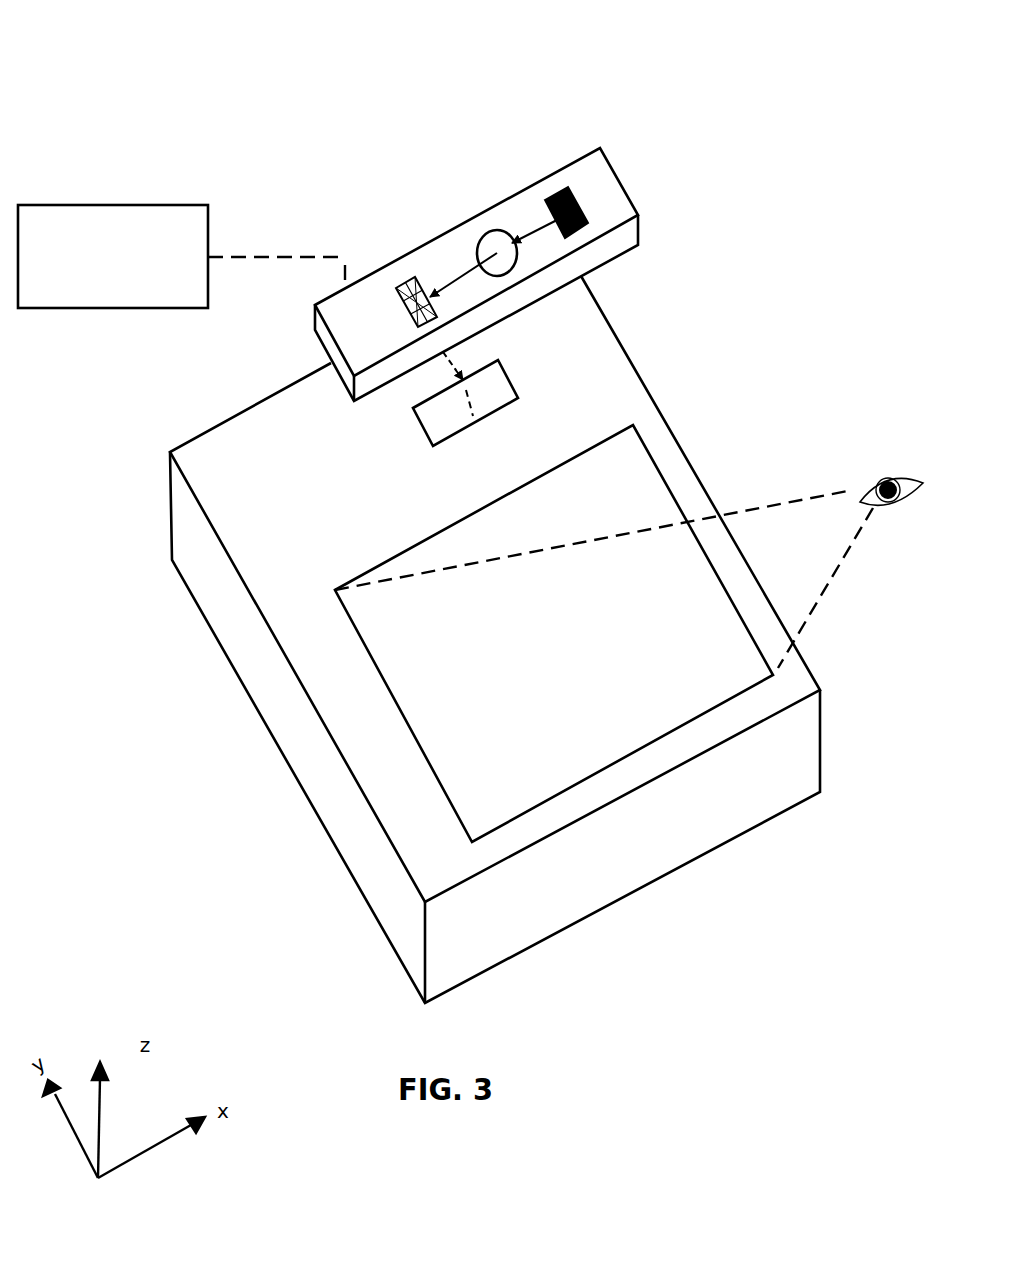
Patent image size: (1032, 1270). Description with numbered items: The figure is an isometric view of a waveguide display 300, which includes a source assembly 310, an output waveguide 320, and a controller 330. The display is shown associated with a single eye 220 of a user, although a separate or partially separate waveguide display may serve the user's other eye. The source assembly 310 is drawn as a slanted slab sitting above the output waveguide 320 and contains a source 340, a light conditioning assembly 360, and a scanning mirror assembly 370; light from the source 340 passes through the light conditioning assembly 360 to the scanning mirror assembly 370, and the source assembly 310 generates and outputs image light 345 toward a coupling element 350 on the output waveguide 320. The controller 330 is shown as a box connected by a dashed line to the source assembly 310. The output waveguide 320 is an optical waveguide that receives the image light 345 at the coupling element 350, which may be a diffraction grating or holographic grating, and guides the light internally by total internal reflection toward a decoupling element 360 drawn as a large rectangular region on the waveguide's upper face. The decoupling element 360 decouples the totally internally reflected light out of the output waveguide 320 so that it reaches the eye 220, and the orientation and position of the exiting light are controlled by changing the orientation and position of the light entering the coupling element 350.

The waveguide display 300 is at (63, 43).
The source assembly 310 is at (607, 211).
The output waveguide 320 is at (345, 757).
The controller 330 is at (93, 282).
The source 340 is at (567, 188).
The image light 345 is at (468, 393).
The coupling element 350 is at (520, 398).
The decoupling element 360 is at (460, 828).
The scanning mirror assembly 370 is at (399, 285).
The eye 220 is at (893, 537).